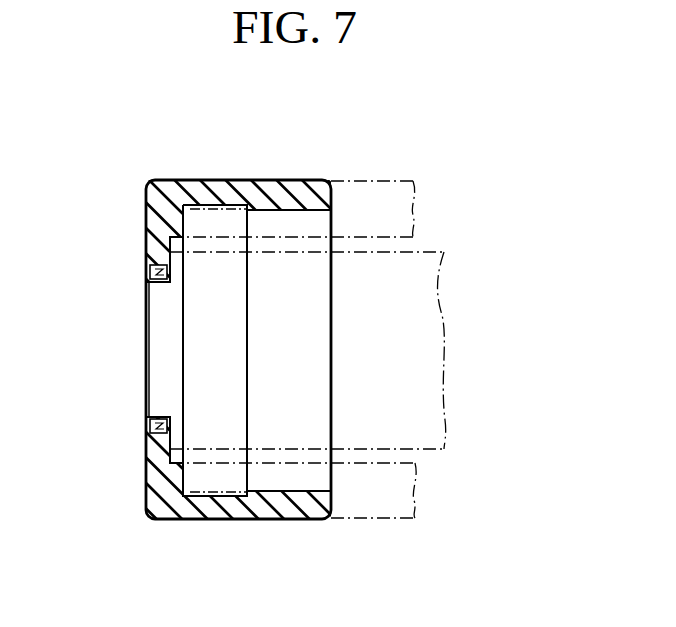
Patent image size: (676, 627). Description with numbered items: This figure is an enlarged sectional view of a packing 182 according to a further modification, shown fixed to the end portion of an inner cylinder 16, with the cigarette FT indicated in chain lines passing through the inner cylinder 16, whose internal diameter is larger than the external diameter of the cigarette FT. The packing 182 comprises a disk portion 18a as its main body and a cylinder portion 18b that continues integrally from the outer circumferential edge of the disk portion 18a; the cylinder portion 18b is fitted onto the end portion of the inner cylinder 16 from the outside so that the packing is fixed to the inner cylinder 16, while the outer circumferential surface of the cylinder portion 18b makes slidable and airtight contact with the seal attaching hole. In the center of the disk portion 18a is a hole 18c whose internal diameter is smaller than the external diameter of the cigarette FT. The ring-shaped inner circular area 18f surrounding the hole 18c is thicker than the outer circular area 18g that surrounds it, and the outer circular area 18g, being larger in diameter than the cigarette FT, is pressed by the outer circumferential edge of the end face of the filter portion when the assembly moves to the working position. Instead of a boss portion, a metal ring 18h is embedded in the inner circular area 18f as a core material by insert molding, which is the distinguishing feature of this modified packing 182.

The packing 182 is at (263, 181).
The inner cylinder 16 is at (387, 187).
The cigarette FT is at (425, 351).
The metal ring 18h is at (151, 273).
The hole 18c is at (151, 414).
The inner circular area 18f is at (150, 427).
The outer circular area 18g is at (148, 449).
The disk portion 18a is at (161, 485).
The cylinder portion 18b is at (245, 516).